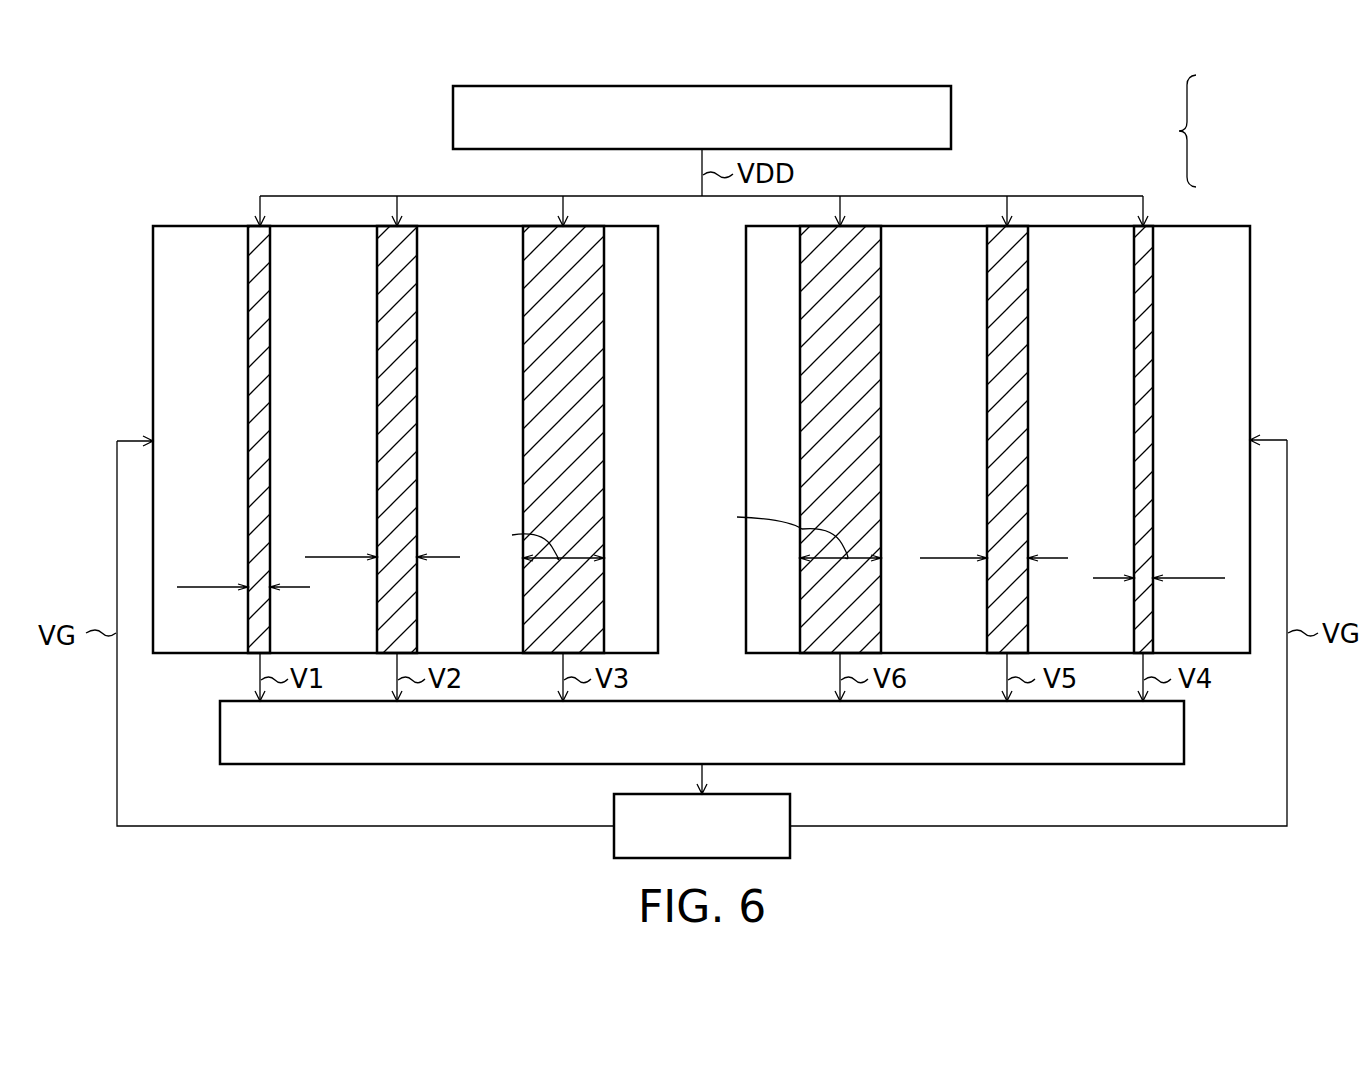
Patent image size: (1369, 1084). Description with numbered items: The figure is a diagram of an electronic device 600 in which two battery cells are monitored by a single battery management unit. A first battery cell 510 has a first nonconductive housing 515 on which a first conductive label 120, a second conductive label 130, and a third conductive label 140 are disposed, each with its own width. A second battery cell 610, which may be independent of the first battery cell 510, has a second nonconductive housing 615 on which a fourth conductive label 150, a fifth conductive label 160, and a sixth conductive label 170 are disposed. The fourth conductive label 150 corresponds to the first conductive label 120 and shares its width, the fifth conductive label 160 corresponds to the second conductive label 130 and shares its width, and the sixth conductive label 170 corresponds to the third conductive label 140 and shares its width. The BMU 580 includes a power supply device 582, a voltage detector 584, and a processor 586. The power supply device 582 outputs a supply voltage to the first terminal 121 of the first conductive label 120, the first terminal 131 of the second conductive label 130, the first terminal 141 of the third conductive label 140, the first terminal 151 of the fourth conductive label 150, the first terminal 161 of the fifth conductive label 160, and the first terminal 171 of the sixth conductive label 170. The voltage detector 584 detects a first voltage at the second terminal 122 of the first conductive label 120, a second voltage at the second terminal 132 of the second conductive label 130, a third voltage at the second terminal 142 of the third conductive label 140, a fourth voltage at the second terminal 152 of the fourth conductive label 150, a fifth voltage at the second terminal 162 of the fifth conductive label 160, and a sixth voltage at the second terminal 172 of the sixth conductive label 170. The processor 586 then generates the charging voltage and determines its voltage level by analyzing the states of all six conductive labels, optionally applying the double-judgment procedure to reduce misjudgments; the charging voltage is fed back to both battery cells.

The electronic device 600 is at (118, 106).
The power supply device 582 is at (453, 118).
The voltage detector 584 is at (219, 733).
The processor 586 is at (614, 803).
The BMU 580 is at (1186, 131).
The first battery cell 510 is at (349, 439).
The first nonconductive housing 515 is at (153, 400).
The second battery cell 610 is at (1025, 439).
The second nonconductive housing 615 is at (1250, 400).
The first conductive label 120 is at (263, 450).
The first terminal of the first conductive label 121 is at (259, 240).
The second terminal of the first conductive label 122 is at (259, 646).
The second conductive label 130 is at (408, 403).
The first terminal of the second conductive label 131 is at (388, 240).
The second terminal of the second conductive label 132 is at (386, 650).
The third conductive label 140 is at (530, 444).
The first terminal of the third conductive label 141 is at (543, 232).
The second terminal of the third conductive label 142 is at (540, 650).
The fourth conductive label 150 is at (1140, 440).
The first terminal of the fourth conductive label 151 is at (1143, 238).
The second terminal of the fourth conductive label 152 is at (1138, 651).
The fifth conductive label 160 is at (990, 444).
The first terminal of the fifth conductive label 161 is at (989, 238).
The second terminal of the fifth conductive label 162 is at (991, 650).
The sixth conductive label 170 is at (873, 400).
The first terminal of the sixth conductive label 171 is at (800, 240).
The second terminal of the sixth conductive label 172 is at (806, 648).